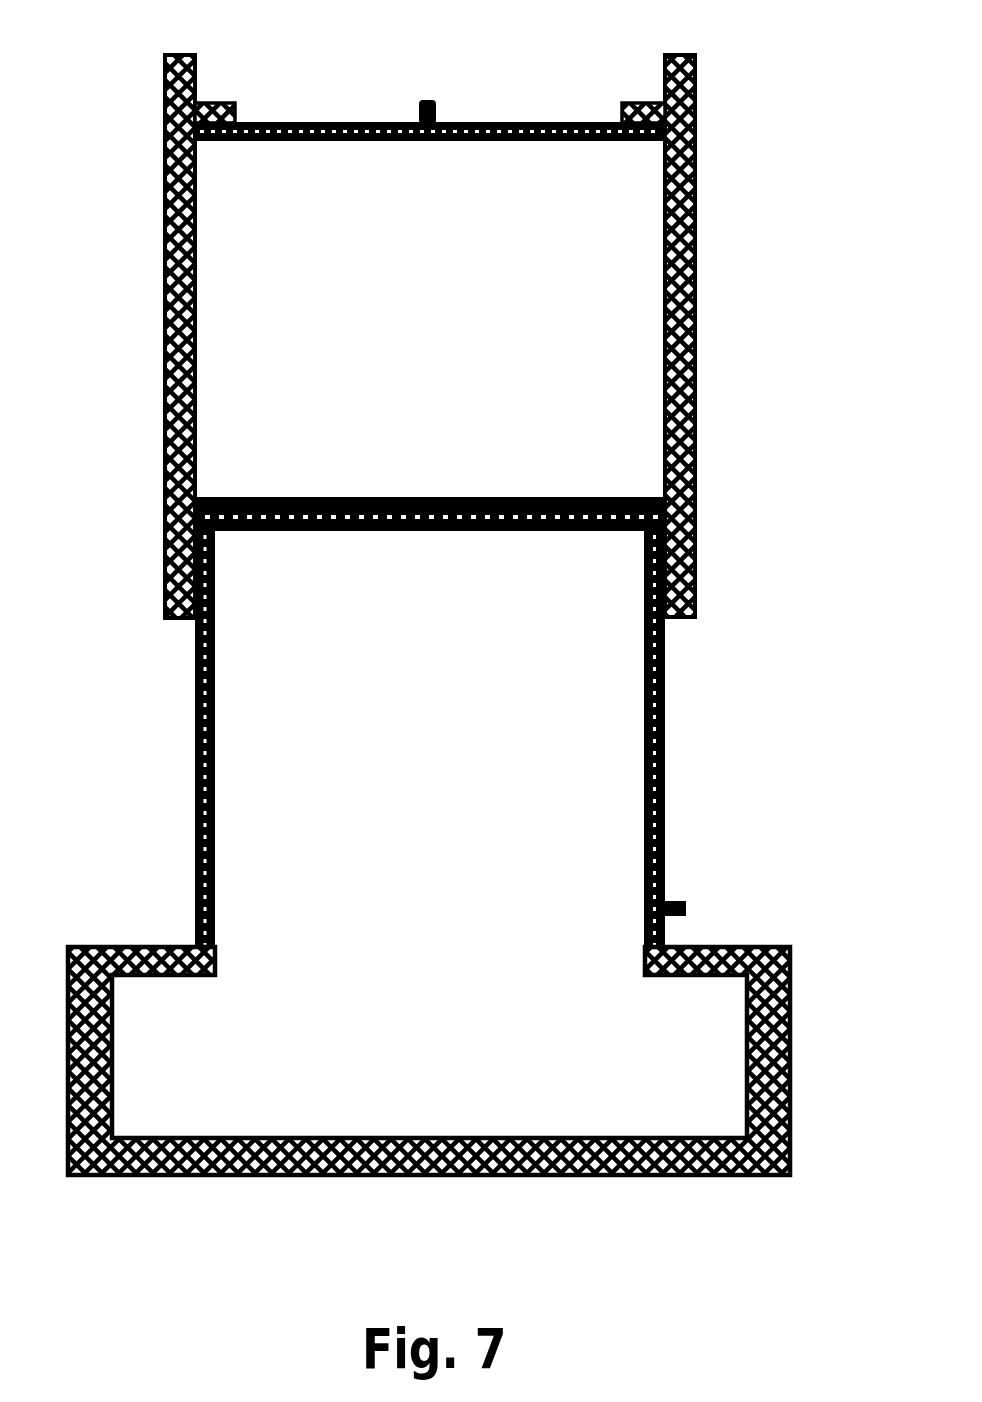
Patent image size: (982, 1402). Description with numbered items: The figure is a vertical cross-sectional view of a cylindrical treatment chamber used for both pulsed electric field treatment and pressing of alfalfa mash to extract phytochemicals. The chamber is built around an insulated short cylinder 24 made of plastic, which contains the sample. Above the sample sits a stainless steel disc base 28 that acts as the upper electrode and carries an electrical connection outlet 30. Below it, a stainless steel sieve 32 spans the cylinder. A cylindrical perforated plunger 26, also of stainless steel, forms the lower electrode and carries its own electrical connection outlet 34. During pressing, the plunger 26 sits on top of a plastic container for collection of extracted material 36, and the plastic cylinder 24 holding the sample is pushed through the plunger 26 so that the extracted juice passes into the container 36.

The insulated short cylinder 24 is at (695, 150).
The cylindrical perforated plunger 26 is at (665, 710).
The disc base 28 is at (285, 125).
The electrical connection outlet 30 is at (435, 107).
The stainless steel sieve 32 is at (460, 498).
The electrical connection outlet 34 is at (685, 905).
The plastic container for collection of extracted material 36 is at (718, 945).